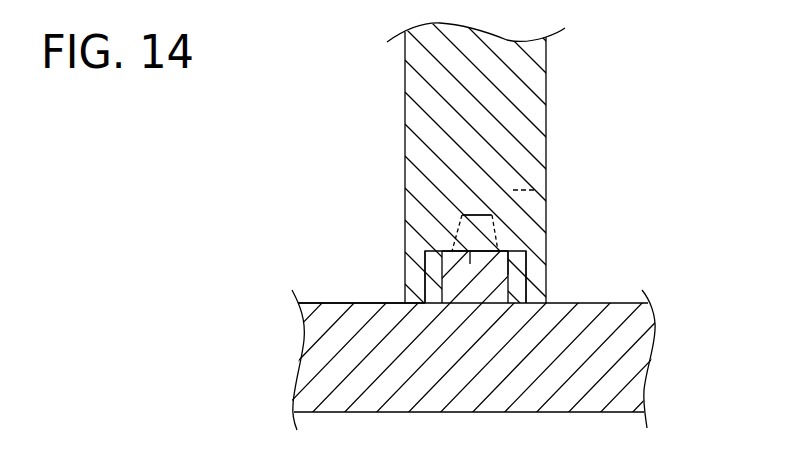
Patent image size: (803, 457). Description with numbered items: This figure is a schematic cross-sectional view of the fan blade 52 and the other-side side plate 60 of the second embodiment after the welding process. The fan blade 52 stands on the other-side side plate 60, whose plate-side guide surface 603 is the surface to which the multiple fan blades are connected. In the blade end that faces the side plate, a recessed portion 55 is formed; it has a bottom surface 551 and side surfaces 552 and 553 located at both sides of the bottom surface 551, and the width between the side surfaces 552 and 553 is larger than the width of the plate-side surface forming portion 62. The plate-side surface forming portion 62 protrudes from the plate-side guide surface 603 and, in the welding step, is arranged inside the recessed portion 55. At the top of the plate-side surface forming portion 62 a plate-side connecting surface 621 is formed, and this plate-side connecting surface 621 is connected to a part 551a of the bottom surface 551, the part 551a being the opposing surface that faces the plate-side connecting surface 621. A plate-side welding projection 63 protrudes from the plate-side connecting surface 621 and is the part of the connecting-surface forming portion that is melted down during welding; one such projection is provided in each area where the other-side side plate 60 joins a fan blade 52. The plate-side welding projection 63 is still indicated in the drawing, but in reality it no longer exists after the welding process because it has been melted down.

The fan blade 52 is at (493, 128).
The other-side side plate 60 is at (328, 378).
The plate-side guide surface 603 is at (338, 302).
The recessed portion 55 is at (434, 252).
The bottom surface 551 is at (519, 255).
The part of the bottom surface 551a is at (515, 268).
The side surface 552 is at (428, 283).
The side surface 553 is at (527, 289).
The plate-side surface forming portion 62 is at (460, 215).
The plate-side connecting surface 621 is at (447, 250).
The plate-side welding projection 63 is at (537, 196).